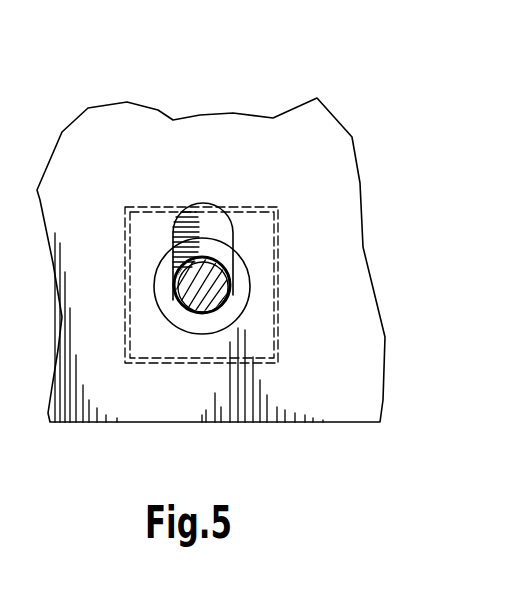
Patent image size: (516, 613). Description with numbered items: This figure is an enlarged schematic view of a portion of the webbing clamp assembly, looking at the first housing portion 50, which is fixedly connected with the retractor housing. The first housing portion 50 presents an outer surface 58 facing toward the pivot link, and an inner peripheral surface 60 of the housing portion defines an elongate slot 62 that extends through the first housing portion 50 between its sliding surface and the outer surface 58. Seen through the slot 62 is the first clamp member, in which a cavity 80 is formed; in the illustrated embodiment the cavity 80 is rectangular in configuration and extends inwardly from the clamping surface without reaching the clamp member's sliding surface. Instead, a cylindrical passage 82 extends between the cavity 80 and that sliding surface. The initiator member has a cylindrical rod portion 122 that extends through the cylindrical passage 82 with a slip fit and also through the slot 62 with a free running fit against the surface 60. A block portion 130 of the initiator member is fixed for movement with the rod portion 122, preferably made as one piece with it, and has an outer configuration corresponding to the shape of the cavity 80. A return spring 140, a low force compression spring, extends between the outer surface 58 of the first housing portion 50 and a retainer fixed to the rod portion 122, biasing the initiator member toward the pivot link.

The first housing portion 50 is at (156, 95).
The outer surface 58 is at (93, 138).
The inner peripheral surface 60 is at (200, 217).
The elongate slot 62 is at (210, 227).
The cavity 80 is at (277, 274).
The cylindrical passage 82 is at (228, 252).
The rod portion 122 is at (183, 306).
The block portion 130 is at (143, 365).
The return spring 140 is at (203, 322).